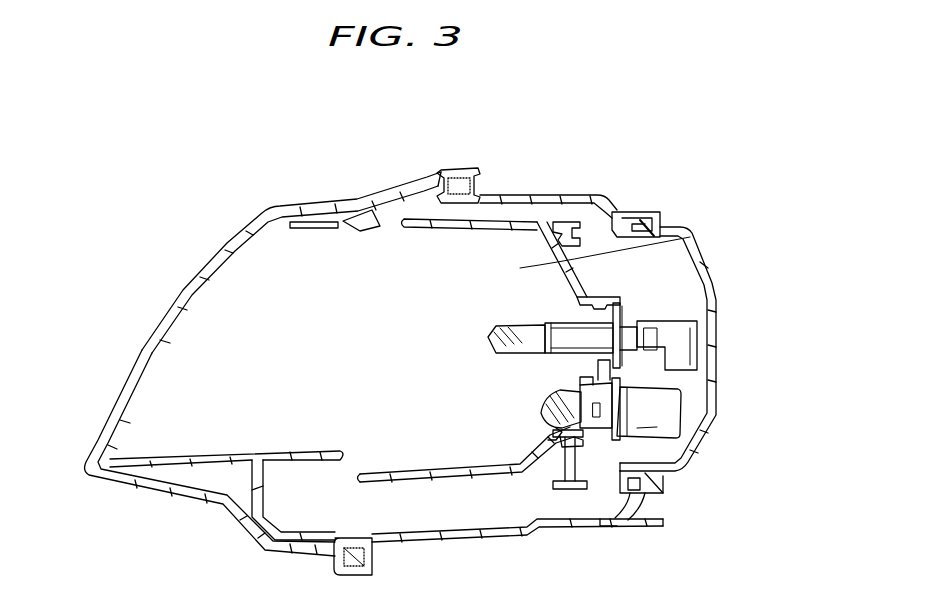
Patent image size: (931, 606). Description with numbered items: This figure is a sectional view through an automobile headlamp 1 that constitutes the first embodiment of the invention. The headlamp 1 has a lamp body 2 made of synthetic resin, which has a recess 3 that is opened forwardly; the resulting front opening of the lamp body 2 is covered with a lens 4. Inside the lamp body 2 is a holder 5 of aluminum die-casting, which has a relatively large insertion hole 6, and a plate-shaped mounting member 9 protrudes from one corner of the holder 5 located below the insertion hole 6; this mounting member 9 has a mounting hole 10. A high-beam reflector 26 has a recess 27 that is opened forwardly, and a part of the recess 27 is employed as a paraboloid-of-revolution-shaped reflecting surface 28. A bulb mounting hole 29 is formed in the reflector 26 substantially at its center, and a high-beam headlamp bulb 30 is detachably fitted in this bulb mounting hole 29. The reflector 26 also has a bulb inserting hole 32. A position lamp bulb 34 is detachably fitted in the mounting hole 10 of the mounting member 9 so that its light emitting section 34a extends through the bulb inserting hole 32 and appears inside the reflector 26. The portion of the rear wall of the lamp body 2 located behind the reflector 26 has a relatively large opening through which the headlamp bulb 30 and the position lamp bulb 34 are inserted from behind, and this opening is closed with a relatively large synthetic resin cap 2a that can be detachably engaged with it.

The headlamp 1 is at (226, 164).
The lamp body 2 is at (530, 195).
The cap 2a is at (716, 418).
The recess 3 is at (480, 522).
The lens 4 is at (186, 286).
The holder 5 is at (571, 490).
The insertion hole 6 is at (690, 238).
The mounting member 9 is at (573, 457).
The mounting hole 10 is at (540, 388).
The high-beam reflector 26 is at (420, 220).
The recess 27 is at (453, 235).
The reflecting surface 28 is at (537, 263).
The bulb mounting hole 29 is at (623, 313).
The high-beam headlamp bulb 30 is at (488, 331).
The bulb inserting hole 32 is at (545, 422).
The position lamp bulb 34 is at (553, 390).
The light emitting section 34a is at (545, 410).